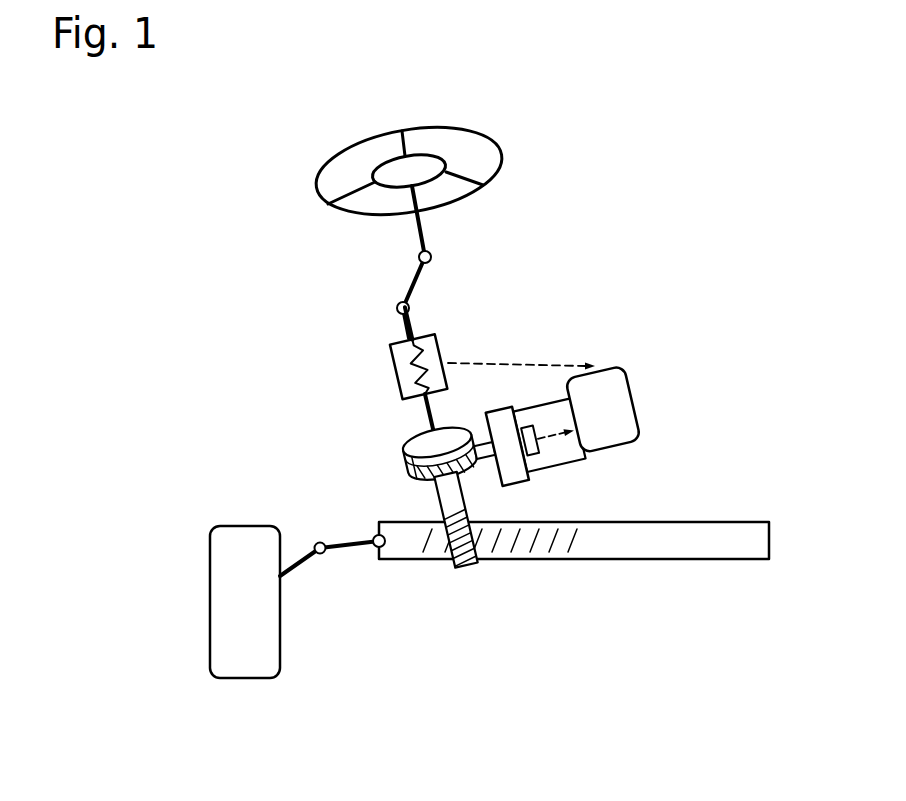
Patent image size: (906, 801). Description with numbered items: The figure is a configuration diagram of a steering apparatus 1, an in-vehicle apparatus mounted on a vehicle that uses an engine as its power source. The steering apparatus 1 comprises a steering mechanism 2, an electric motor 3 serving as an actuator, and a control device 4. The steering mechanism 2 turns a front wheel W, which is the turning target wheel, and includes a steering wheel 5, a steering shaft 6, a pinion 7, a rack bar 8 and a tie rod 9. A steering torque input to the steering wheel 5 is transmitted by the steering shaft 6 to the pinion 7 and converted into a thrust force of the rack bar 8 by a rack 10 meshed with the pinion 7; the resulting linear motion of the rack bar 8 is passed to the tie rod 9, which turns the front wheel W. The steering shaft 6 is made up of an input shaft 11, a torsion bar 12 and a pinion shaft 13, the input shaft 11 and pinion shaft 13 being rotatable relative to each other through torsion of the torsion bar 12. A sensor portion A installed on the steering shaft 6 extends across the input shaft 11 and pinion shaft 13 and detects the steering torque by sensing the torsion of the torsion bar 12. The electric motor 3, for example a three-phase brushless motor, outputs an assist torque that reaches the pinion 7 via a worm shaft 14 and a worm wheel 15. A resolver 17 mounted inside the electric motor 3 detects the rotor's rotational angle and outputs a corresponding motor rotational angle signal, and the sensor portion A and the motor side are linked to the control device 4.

The steering apparatus 1 is at (612, 248).
The steering mechanism 2 is at (448, 565).
The electric motor 3 is at (557, 467).
The control device 4 is at (657, 380).
The steering wheel 5 is at (343, 152).
The steering shaft 6 is at (407, 278).
The pinion 7 is at (466, 570).
The rack bar 8 is at (707, 522).
The tie rod 9 is at (355, 550).
The rack 10 is at (542, 548).
The input shaft 11 is at (400, 317).
The torsion bar 12 is at (405, 367).
The pinion shaft 13 is at (428, 425).
The worm shaft 14 is at (417, 474).
The worm wheel 15 is at (406, 466).
The resolver 17 is at (537, 455).
The sensor portion A is at (438, 343).
The front wheel W is at (238, 525).